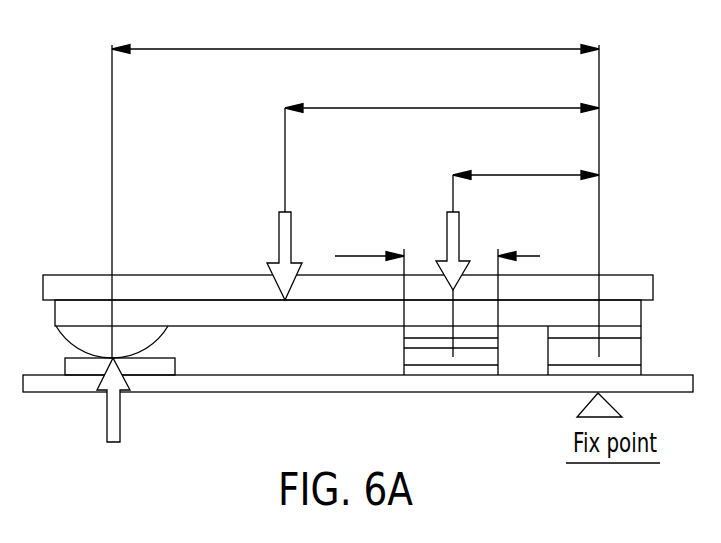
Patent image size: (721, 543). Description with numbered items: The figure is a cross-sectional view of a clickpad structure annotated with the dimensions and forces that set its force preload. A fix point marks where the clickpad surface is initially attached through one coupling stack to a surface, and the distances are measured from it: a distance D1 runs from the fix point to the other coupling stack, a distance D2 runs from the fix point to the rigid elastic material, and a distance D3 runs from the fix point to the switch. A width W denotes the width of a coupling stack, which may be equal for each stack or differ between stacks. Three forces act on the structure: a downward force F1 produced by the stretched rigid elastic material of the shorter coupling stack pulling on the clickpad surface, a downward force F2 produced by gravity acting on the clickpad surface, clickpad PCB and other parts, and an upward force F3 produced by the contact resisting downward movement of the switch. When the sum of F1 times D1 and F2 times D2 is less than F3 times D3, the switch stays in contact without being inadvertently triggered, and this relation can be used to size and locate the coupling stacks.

The distance from fix point to other coupling stack D1 is at (526, 173).
The distance from fix point to rigid elastic material D2 is at (442, 137).
The distance from fix point to switch D3 is at (355, 179).
The downward force from extended coupling stack F1 is at (503, 235).
The downward gravitational force F2 is at (277, 207).
The upward contact force F3 is at (92, 442).
The width of coupling stack W is at (450, 252).